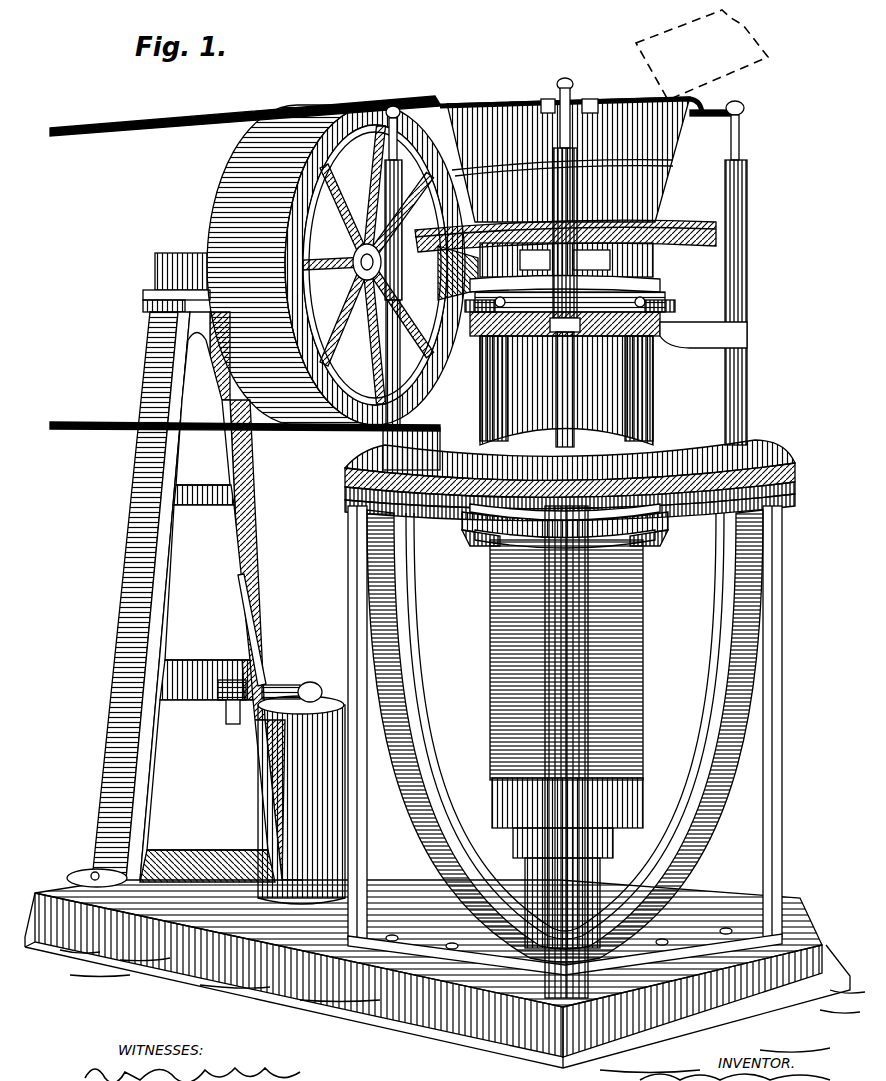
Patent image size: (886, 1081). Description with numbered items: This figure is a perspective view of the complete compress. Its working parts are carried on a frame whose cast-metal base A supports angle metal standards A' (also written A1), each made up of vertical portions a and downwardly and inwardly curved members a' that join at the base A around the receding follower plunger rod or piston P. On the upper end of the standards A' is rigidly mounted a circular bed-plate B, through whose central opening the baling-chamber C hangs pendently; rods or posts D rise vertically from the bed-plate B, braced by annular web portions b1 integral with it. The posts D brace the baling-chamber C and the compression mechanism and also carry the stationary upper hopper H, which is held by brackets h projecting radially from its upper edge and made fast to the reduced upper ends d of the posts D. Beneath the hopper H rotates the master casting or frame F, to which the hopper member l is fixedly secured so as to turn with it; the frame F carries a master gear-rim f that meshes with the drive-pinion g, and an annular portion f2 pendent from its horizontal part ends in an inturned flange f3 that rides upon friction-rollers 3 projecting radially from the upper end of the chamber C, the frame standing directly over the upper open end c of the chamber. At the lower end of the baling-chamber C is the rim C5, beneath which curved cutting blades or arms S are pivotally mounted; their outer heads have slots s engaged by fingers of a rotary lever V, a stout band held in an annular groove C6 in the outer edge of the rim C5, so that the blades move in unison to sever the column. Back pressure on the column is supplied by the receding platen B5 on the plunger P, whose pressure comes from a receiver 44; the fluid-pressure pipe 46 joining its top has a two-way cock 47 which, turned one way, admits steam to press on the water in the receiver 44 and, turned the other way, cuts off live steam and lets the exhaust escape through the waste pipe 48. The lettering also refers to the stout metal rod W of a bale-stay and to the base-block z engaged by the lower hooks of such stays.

The cast-metal base A is at (445, 975).
The angle metal standard A1 is at (184, 570).
The stationary upper hopper H is at (571, 159).
The bracket h is at (637, 117).
The hopper member l is at (562, 180).
The stay rod W is at (336, 265).
The master frame F is at (565, 231).
The drive-pinion g is at (458, 273).
The upper open end of baling-chamber c is at (566, 260).
The master gear-rim f is at (670, 270).
The annular portion of frame f2 is at (660, 274).
The inturned flange f3 is at (662, 292).
The friction-roller 3 is at (663, 305).
The baling-chamber C is at (566, 390).
The post D is at (456, 419).
The cutting blade S is at (565, 262).
The reduced upper end of post d is at (570, 273).
The circular bed-plate B is at (570, 480).
The annular web portion b1 is at (570, 459).
The vertical portion of standard a is at (573, 740).
The angle metal standard A' is at (564, 736).
The curved member of standard a' is at (565, 736).
The rim of baling-chamber C5 is at (665, 528).
The annular groove C6 is at (565, 508).
The rotary lever V is at (565, 535).
The slot s is at (565, 543).
The base-block z is at (566, 684).
The receding platen B5 is at (605, 848).
The plunger P is at (648, 878).
The receiver 44 is at (301, 800).
The two-way cock 47 is at (248, 654).
The fluid pressure pipe 46 is at (294, 686).
The exhaust pipe 48 is at (228, 706).